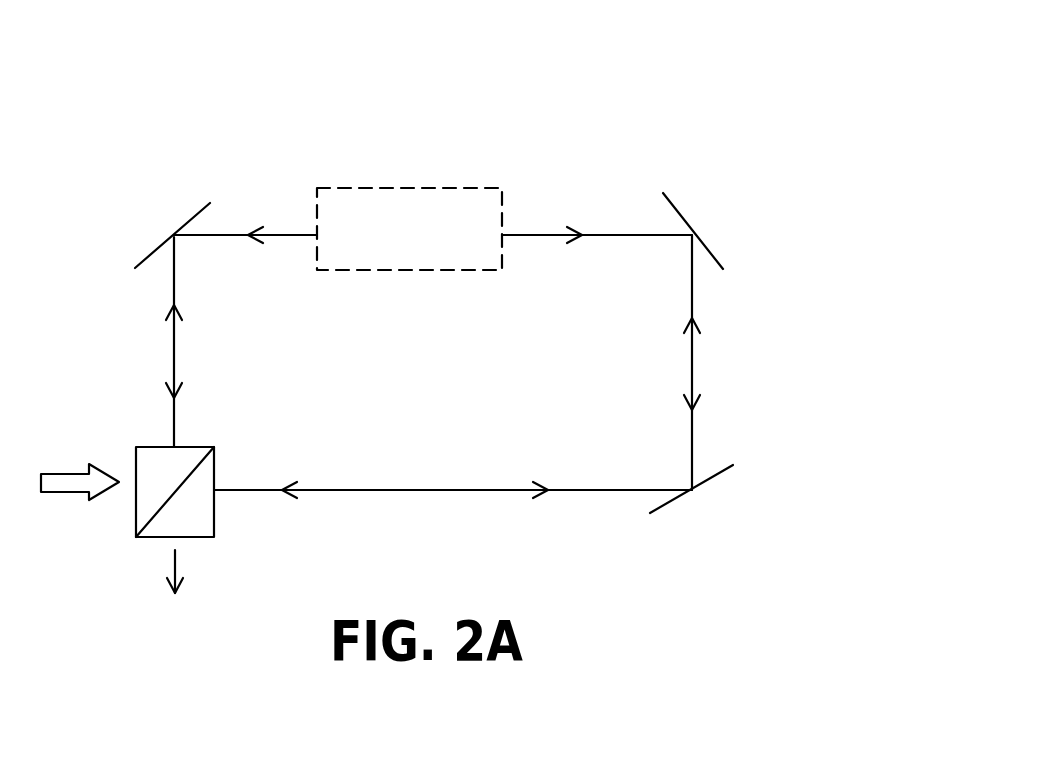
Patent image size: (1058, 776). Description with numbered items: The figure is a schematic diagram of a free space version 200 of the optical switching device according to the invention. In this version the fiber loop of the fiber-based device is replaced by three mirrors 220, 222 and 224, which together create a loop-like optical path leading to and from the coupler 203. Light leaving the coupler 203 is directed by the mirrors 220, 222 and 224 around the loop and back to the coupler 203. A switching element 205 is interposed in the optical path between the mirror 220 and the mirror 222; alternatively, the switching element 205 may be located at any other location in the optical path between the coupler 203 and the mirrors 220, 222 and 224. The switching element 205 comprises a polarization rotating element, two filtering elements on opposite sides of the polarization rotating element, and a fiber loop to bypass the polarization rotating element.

The free space version 200 is at (689, 79).
The coupler 203 is at (132, 512).
The switching element 205 is at (503, 210).
The mirror 220 is at (152, 252).
The mirror 222 is at (710, 249).
The mirror 224 is at (718, 473).